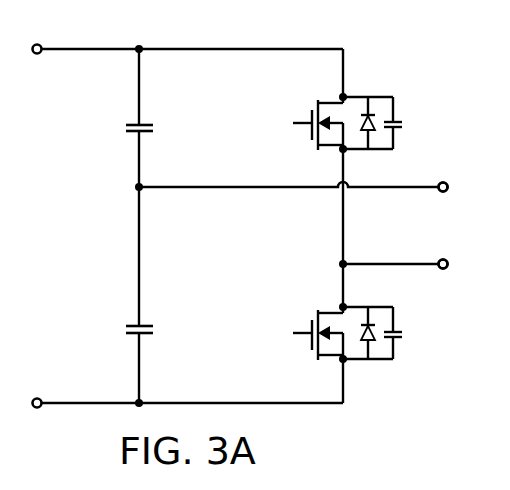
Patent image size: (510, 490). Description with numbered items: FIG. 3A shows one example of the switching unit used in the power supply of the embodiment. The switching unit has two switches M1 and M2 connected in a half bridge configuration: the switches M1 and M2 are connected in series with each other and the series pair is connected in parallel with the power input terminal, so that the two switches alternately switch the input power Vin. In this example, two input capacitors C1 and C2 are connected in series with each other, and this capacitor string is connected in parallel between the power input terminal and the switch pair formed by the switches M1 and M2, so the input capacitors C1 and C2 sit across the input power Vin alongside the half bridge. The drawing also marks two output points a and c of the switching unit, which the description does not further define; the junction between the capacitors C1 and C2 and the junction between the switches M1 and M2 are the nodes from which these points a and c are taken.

The input power Vin is at (25, 226).
The input capacitor C1 is at (124, 131).
The input capacitor C2 is at (124, 334).
The switch M1 is at (332, 123).
The switch M2 is at (332, 333).
The output terminal a is at (454, 188).
The output terminal c is at (453, 265).